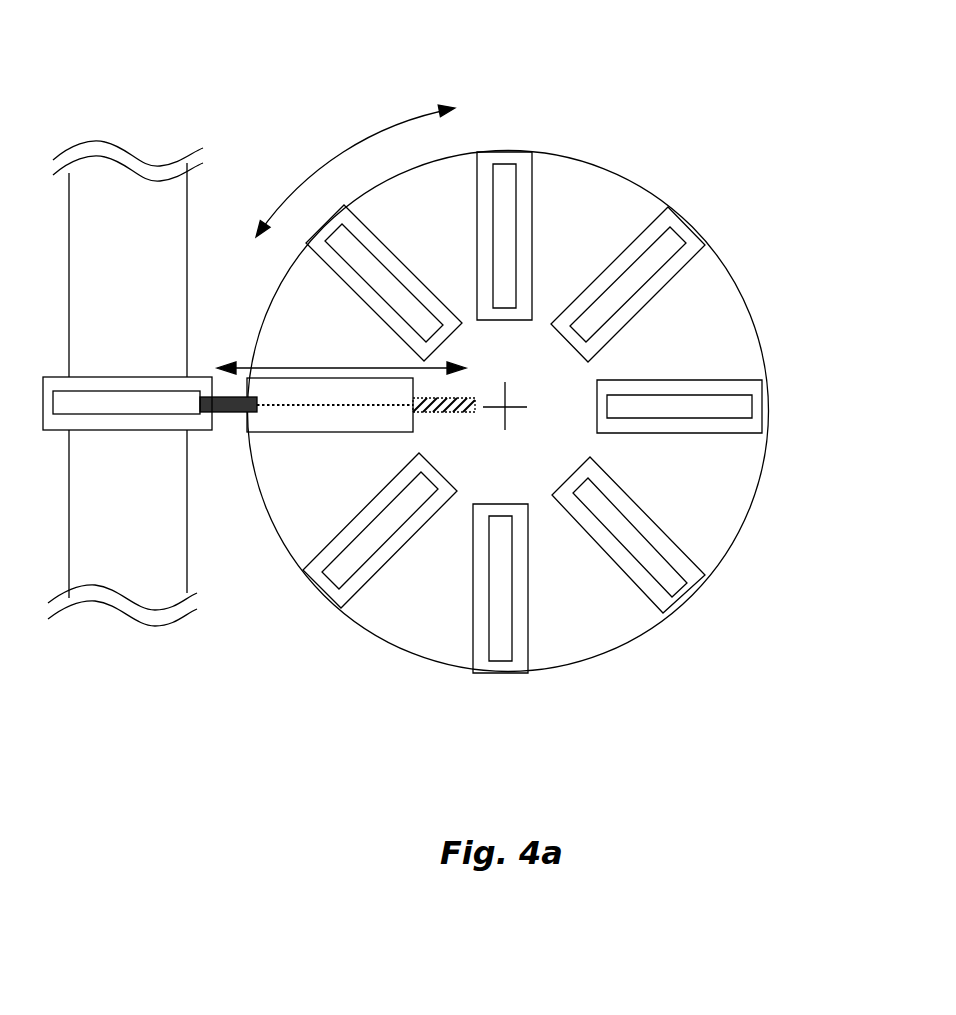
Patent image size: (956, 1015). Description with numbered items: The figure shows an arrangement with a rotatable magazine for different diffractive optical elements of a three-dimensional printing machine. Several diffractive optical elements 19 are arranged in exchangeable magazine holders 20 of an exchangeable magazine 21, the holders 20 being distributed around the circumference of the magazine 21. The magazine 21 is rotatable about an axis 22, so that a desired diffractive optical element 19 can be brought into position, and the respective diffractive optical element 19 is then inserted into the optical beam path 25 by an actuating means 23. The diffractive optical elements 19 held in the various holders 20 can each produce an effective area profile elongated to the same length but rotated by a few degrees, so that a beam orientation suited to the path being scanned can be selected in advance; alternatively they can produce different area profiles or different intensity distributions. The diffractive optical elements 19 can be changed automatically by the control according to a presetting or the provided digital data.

The diffractive optical elements 19 is at (698, 405).
The exchangeable magazine holders 20 is at (347, 590).
The exchangeable magazine 21 is at (716, 310).
The axis 22 is at (505, 407).
The actuating means 23 is at (448, 412).
The optical beam path 25 is at (157, 240).